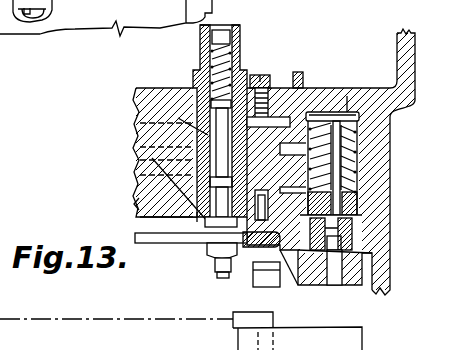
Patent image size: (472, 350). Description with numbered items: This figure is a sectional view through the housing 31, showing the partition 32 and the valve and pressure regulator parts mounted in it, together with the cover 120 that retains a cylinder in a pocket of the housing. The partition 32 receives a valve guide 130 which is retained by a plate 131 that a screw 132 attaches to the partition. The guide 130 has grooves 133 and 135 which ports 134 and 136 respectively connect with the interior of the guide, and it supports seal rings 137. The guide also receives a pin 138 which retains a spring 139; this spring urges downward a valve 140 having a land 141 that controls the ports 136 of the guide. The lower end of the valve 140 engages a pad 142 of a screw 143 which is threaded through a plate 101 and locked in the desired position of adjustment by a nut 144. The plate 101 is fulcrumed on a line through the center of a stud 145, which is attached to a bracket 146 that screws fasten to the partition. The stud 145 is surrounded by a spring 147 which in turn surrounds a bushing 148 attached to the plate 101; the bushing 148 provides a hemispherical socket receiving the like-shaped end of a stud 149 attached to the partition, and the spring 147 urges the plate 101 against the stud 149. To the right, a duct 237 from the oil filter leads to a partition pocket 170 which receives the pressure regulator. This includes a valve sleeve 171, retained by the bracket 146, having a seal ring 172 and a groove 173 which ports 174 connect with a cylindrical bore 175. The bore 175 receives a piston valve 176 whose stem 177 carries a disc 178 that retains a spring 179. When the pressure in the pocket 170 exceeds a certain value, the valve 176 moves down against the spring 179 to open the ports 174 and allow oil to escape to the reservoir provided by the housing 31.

The housing 31 is at (398, 31).
The partition 32 is at (137, 101).
The plate 101 is at (148, 243).
The cover 120 is at (356, 343).
The valve guide 130 is at (208, 58).
The plate 131 is at (298, 84).
The screw 132 is at (262, 75).
The groove 133 is at (190, 125).
The port 134 is at (178, 118).
The groove 135 is at (140, 205).
The port 136 is at (142, 218).
The seal ring 137 is at (184, 218).
The pin 138 is at (226, 36).
The spring 139 is at (233, 56).
The valve 140 is at (214, 248).
The land 141 is at (187, 240).
The pad 142 is at (214, 265).
The screw 143 is at (220, 278).
The nut 144 is at (241, 256).
The stud 145 is at (270, 287).
The bracket 146 is at (345, 286).
The spring 147 is at (290, 265).
The bushing 148 is at (268, 226).
The stud 149 is at (317, 286).
The partition pocket 170 is at (352, 135).
The valve sleeve 171 is at (352, 206).
The seal ring 172 is at (356, 168).
The groove 173 is at (347, 232).
The port 174 is at (346, 190).
The cylindrical bore 175 is at (362, 152).
The piston valve 176 is at (350, 218).
The stem 177 is at (360, 117).
The disc 178 is at (347, 96).
The spring 179 is at (360, 112).
The duct 237 is at (296, 118).